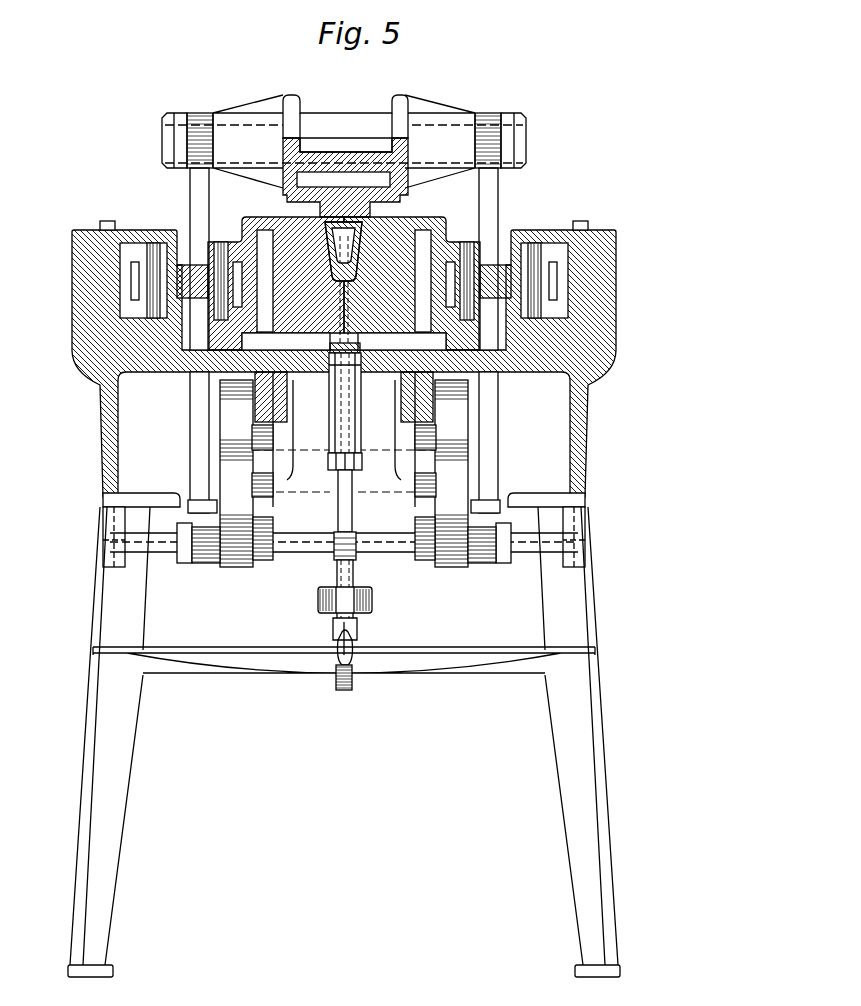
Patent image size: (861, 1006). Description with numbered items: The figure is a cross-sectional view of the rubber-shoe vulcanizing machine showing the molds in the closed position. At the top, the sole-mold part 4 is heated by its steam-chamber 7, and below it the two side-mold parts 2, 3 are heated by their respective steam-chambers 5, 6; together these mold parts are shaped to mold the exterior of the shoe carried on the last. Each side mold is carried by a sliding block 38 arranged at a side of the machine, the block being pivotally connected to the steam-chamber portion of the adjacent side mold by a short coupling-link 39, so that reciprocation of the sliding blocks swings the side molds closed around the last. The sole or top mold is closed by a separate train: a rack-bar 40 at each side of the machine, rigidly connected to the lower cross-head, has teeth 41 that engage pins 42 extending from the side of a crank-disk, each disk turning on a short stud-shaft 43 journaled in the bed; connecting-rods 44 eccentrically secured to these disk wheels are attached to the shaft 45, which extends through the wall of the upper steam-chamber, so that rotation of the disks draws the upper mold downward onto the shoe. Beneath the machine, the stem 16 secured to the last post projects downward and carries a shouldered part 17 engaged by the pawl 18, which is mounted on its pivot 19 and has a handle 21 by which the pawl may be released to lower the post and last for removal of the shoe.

The side-mold part 2 is at (306, 219).
The side-mold part 3 is at (396, 219).
The sole-mold part 4 is at (345, 156).
The steam-chamber 5 is at (265, 281).
The steam-chamber 6 is at (423, 281).
The steam-chamber 7 is at (308, 178).
The stem 16 is at (337, 517).
The shouldered part 17 is at (350, 556).
The pawl 18 is at (336, 577).
The pivot 19 is at (320, 597).
The handle 21 is at (352, 638).
The sliding block 38 is at (118, 263).
The coupling-link 39 is at (180, 242).
The rack-bar 40 is at (280, 400).
The teeth 41 is at (280, 421).
The pin 42 is at (274, 483).
The stud-shaft 43 is at (218, 460).
The connecting-rod 44 is at (193, 398).
The shaft 45 is at (452, 137).